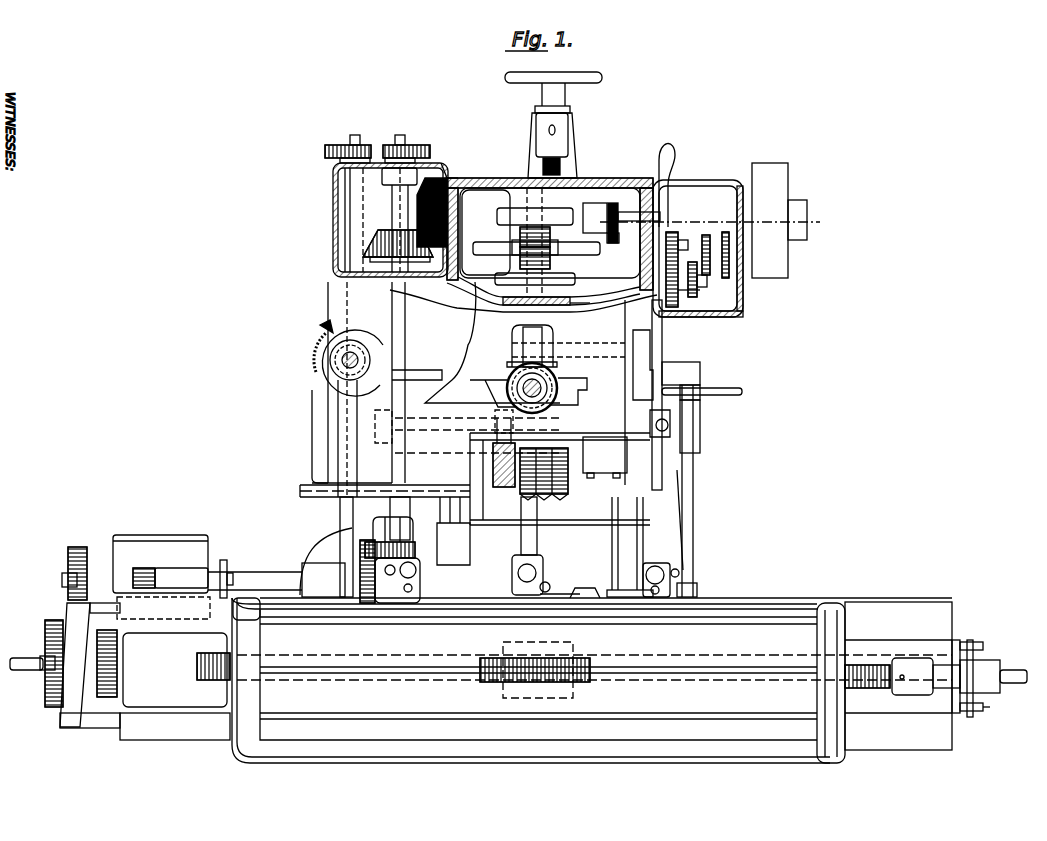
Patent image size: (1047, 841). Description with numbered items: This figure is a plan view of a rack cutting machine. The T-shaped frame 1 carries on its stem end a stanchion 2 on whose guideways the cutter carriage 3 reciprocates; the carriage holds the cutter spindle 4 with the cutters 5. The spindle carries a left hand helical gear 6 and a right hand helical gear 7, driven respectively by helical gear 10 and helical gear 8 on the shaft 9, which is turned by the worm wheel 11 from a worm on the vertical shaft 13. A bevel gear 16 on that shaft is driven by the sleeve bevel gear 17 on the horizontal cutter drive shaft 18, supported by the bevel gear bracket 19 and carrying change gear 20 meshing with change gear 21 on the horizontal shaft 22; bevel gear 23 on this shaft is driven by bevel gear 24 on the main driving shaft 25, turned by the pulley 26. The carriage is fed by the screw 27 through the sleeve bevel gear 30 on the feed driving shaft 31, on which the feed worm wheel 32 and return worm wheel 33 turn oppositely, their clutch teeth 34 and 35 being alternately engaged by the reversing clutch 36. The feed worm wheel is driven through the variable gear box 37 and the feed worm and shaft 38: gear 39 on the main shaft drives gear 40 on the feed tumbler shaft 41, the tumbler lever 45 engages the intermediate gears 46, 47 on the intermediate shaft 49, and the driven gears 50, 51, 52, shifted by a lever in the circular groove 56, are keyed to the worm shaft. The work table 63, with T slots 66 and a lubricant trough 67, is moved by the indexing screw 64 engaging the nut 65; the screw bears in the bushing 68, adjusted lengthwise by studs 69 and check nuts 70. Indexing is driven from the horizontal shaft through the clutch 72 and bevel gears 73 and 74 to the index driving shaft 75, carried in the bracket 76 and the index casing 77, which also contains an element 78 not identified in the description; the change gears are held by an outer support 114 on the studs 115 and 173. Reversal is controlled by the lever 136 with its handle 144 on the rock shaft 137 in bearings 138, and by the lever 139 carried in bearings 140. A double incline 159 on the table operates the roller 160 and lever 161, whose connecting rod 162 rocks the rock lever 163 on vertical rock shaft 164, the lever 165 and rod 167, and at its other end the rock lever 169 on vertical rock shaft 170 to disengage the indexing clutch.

The frame 1 is at (478, 180).
The stanchion 2 is at (470, 340).
The cutter carriage 3 is at (412, 488).
The cutter spindle 4 is at (585, 478).
The cutters 5 is at (555, 500).
The left hand helical gear 6 is at (505, 486).
The right hand helical gear 7 is at (375, 485).
The helical gear 8 is at (380, 435).
The shaft 9 is at (450, 430).
The helical gear 10 is at (513, 427).
The worm wheel 11 is at (328, 460).
The vertical shaft 13 is at (342, 360).
The bevel gear 16 is at (318, 345).
The sleeve bevel gear 17 is at (320, 326).
The horizontal cutter drive shaft 18 is at (340, 505).
The bevel gear bracket 19 is at (333, 183).
The change gear 20 is at (325, 152).
The change gear 21 is at (431, 151).
The horizontal shaft 22 is at (400, 511).
The bevel gear 23 is at (370, 238).
The bevel gear 24 is at (447, 178).
The main driving shaft 25 is at (468, 213).
The pulley 26 is at (770, 278).
The screw 27 is at (550, 405).
The sleeve bevel gear 30 is at (555, 368).
The horizontal feed driving shaft 31 is at (537, 543).
The feed worm wheel 32 is at (588, 303).
The return worm wheel 33 is at (588, 204).
The clutch teeth 34 is at (550, 262).
The clutch teeth 35 is at (522, 231).
The reversing clutch member 36 is at (522, 262).
The variable gear box 37 is at (700, 181).
The feed worm and shaft 38 is at (600, 278).
The gear 39 is at (614, 203).
The gear 40 is at (607, 238).
The feed tumbler shaft 41 is at (630, 222).
The tumbler lever 45 is at (675, 153).
The intermediate gear 46 is at (726, 232).
The intermediate gear 47 is at (706, 235).
The intermediate shaft 49 is at (684, 240).
The driven gear 50 is at (707, 285).
The driven gear 51 is at (693, 297).
The driven gear 52 is at (672, 308).
The circular groove 56 is at (690, 300).
The work table 63 is at (760, 603).
The indexing screw 64 is at (27, 668).
The nut 65 is at (575, 690).
The T slots 66 is at (817, 624).
The trough 67 is at (838, 757).
The bushing 68 is at (973, 655).
The studs 69 is at (965, 642).
The check nuts 70 is at (972, 712).
The clutch 72 is at (415, 562).
The bevel gear 73 is at (415, 545).
The bevel gear 74 is at (366, 540).
The index driving shaft 75 is at (268, 574).
The bracket 76 is at (325, 550).
The index casing 77 is at (207, 553).
The pinion 78 is at (146, 572).
The outer support 114 is at (80, 705).
The stud 115 is at (120, 607).
The lever 136 is at (700, 398).
The horizontal rock shaft 137 is at (695, 545).
The bearings 138 is at (700, 373).
The lever 139 is at (700, 432).
The bearings 140 is at (668, 438).
The handle 144 is at (714, 387).
The double incline 159 is at (580, 601).
The roller 160 is at (548, 583).
The lever 161 is at (512, 580).
The connecting rod 162 is at (625, 592).
The rock lever 163 is at (660, 593).
The vertical rock shaft 164 is at (646, 570).
The lever 165 is at (673, 568).
The rod 167 is at (678, 536).
The rock lever 169 is at (412, 587).
The vertical rock shaft 170 is at (416, 570).
The stud 173 is at (108, 719).